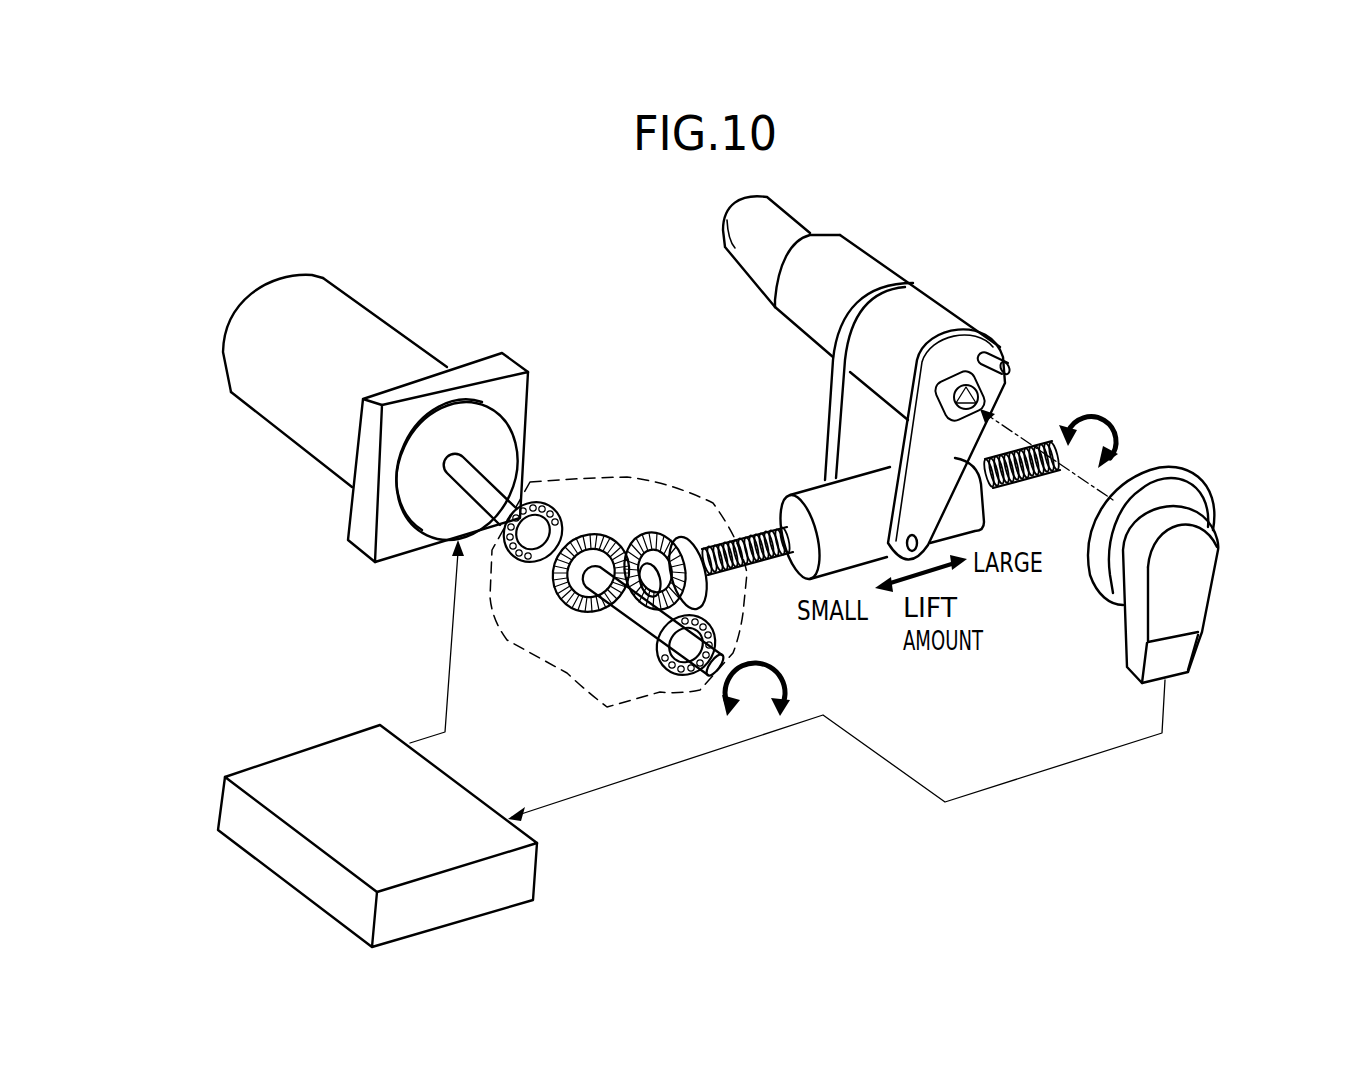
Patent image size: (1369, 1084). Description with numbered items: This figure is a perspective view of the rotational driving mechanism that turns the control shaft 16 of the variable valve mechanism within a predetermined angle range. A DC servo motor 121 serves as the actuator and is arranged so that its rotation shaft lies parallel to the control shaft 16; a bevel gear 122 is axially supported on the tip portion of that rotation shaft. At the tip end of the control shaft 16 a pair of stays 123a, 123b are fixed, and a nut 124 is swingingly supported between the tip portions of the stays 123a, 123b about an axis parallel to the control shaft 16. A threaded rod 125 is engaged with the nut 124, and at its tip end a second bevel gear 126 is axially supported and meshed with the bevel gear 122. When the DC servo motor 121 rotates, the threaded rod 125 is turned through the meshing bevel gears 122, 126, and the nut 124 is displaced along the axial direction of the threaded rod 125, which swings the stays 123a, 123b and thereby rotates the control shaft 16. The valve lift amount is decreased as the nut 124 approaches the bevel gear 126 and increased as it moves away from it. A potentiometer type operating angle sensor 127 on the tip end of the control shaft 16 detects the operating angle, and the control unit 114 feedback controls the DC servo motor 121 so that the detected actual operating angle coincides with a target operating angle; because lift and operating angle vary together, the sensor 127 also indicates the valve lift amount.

The control shaft 16 is at (755, 262).
The control unit 114 is at (262, 848).
The DC servo motor 121 is at (367, 330).
The bevel gear 122 is at (590, 533).
The stay 123a is at (830, 411).
The stay 123b is at (985, 400).
The nut 124 is at (815, 490).
The threaded rod 125 is at (1015, 484).
The bevel gear 126 is at (655, 533).
The operating angle sensor 127 is at (1212, 513).